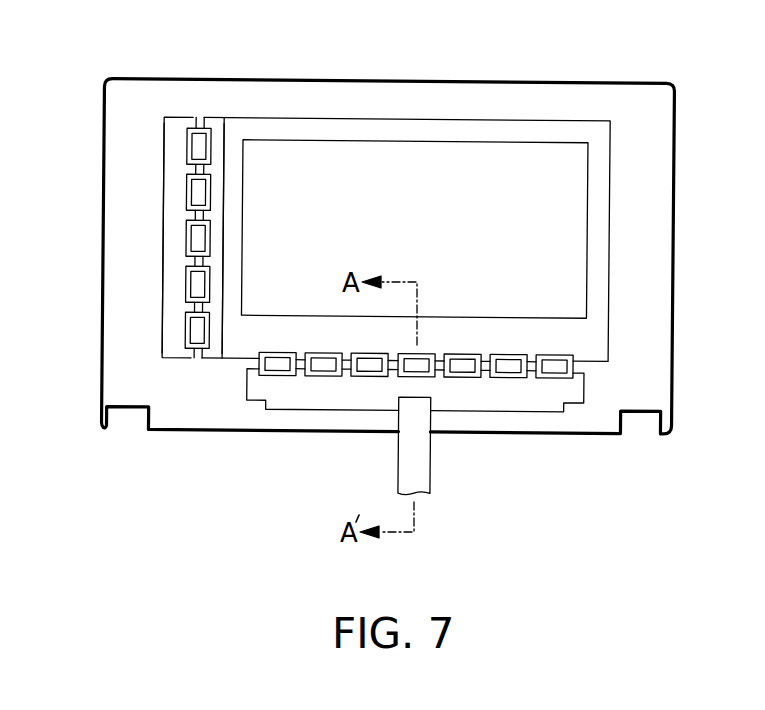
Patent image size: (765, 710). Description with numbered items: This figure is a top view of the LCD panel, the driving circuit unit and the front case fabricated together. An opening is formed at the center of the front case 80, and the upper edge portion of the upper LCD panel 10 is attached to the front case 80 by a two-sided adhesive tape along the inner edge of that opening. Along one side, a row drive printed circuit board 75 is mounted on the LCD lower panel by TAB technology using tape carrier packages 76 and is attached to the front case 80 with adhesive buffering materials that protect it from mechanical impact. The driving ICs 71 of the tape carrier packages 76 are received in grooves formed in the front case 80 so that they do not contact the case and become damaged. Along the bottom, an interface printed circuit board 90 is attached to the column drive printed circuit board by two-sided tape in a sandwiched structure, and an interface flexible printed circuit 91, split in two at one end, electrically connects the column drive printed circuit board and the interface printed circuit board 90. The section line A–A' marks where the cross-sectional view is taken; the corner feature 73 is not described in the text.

The upper LCD panel 10 is at (502, 157).
The front case 80 is at (122, 142).
The driving IC 71 is at (186, 192).
The row drive printed circuit board 75 is at (168, 246).
The tape carrier package 76 is at (187, 285).
The interface printed circuit board 90 is at (545, 402).
The interface flexible printed circuit 91 is at (428, 468).
The housing frame 73 is at (646, 422).